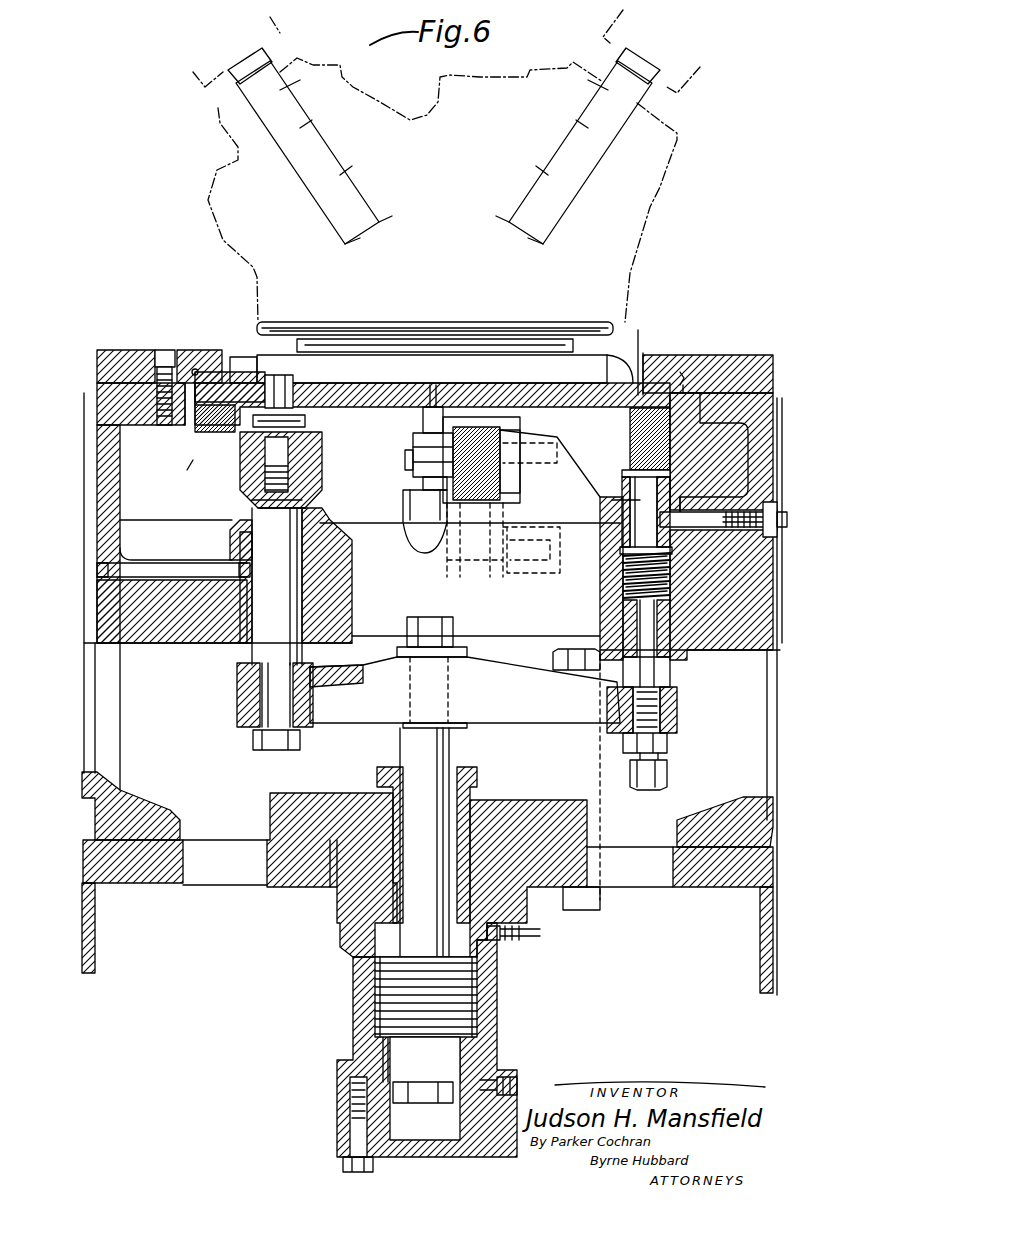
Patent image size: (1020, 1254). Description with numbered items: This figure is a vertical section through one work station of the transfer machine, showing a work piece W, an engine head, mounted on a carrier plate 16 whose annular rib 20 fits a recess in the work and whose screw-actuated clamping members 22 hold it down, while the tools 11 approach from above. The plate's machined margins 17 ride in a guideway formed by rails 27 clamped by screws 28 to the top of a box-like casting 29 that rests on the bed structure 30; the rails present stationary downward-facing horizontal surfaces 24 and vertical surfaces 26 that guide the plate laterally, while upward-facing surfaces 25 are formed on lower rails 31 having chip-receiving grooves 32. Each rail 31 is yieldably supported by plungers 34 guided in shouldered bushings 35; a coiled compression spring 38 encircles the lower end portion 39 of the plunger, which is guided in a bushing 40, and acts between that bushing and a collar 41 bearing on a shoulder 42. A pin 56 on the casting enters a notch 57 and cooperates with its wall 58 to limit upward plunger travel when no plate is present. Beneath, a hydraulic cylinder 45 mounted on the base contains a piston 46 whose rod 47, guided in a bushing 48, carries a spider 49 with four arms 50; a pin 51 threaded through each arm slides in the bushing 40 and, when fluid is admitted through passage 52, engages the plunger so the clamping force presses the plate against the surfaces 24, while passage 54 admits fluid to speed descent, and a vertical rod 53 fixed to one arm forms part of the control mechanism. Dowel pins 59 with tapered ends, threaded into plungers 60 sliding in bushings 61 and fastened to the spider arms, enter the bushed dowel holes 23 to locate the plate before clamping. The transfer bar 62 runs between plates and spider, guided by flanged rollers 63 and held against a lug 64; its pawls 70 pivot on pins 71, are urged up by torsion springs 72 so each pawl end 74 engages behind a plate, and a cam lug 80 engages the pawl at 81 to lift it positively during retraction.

The work piece W is at (652, 197).
The tools 11 is at (365, 232).
The carrier plate 16 is at (508, 395).
The margins 17 is at (186, 415).
The annular rib 20 is at (470, 353).
The clamping members 22 is at (612, 352).
The dowel holes 23 is at (431, 369).
The horizontal surfaces 24 is at (425, 366).
The surfaces 25 is at (432, 437).
The vertical surfaces 26 is at (198, 368).
The rails 27 is at (196, 350).
The screws 28 is at (165, 348).
The casting 29 is at (97, 486).
The bed structure 30 is at (85, 892).
The rails 31 is at (193, 460).
The chip-receiving grooves 32 is at (190, 440).
The plungers 34 is at (612, 500).
The shouldered bushings 35 is at (630, 516).
The coiled compression spring 38 is at (622, 587).
The lower end portion 39 is at (665, 612).
The bushing 40 is at (627, 628).
The collar 41 is at (620, 549).
The shoulder 42 is at (622, 570).
The hydraulic cylinder 45 is at (355, 1047).
The piston 46 is at (380, 977).
The rod 47 is at (400, 754).
The bushing 48 is at (468, 782).
The spider 49 is at (458, 712).
The arms 50 is at (328, 713).
The pin 51 is at (668, 672).
The passage 52 is at (503, 1075).
The vertical rod 53 is at (572, 771).
The passage 54 is at (505, 942).
The pin 56 is at (712, 512).
The notch 57 is at (688, 500).
The wall 58 is at (646, 508).
The dowel pins 59 is at (305, 405).
The plungers 60 is at (312, 496).
The bushings 61 is at (325, 512).
The bar 62 is at (505, 490).
The flanged rollers 63 is at (470, 512).
The lug 64 is at (505, 420).
The pawls 70 is at (423, 430).
The pins 71 is at (405, 464).
The torsion springs 72 is at (413, 451).
The pawl end 74 is at (408, 404).
The cam lug 80 is at (405, 498).
The point of engagement 81 is at (423, 484).